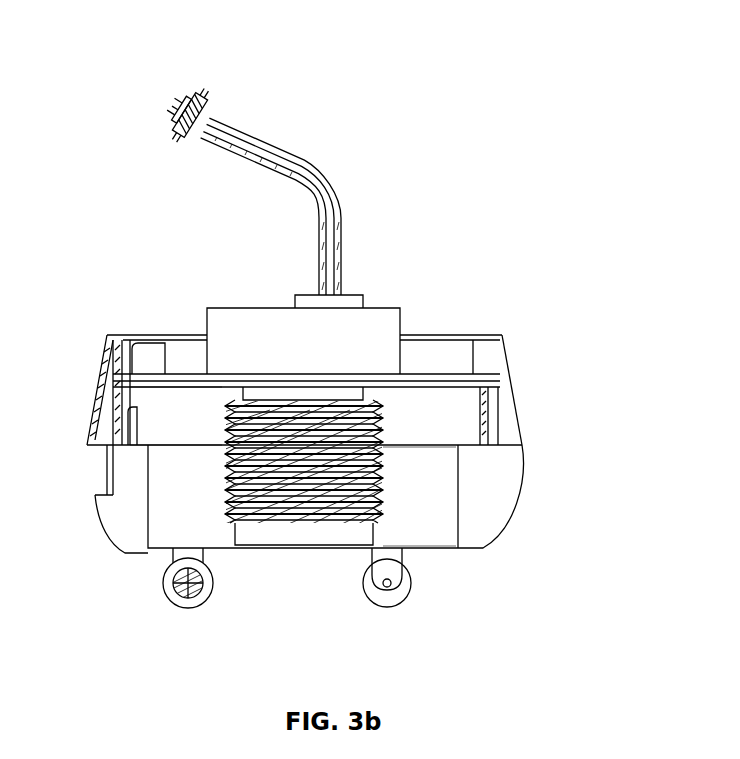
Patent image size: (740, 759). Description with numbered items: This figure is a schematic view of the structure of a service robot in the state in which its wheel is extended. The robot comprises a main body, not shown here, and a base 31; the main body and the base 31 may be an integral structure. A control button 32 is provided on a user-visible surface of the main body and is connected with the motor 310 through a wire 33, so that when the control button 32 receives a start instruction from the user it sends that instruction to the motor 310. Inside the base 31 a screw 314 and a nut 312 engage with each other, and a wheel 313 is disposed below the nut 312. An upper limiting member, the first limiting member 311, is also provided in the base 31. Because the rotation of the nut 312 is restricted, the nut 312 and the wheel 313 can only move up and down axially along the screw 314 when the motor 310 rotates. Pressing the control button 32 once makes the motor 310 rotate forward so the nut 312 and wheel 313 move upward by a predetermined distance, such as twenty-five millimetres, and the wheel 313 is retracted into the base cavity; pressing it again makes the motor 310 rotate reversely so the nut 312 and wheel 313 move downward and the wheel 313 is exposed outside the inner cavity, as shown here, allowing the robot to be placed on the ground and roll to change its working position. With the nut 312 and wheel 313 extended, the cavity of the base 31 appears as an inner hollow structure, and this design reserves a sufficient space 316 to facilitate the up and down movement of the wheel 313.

The base 31 is at (526, 469).
The motor 310 is at (373, 317).
The first limiting member 311 is at (438, 379).
The nut 312 is at (434, 528).
The wheel 313 is at (149, 556).
The screw 314 is at (379, 451).
The space 316 is at (167, 419).
The control button 32 is at (199, 104).
The wire 33 is at (335, 209).